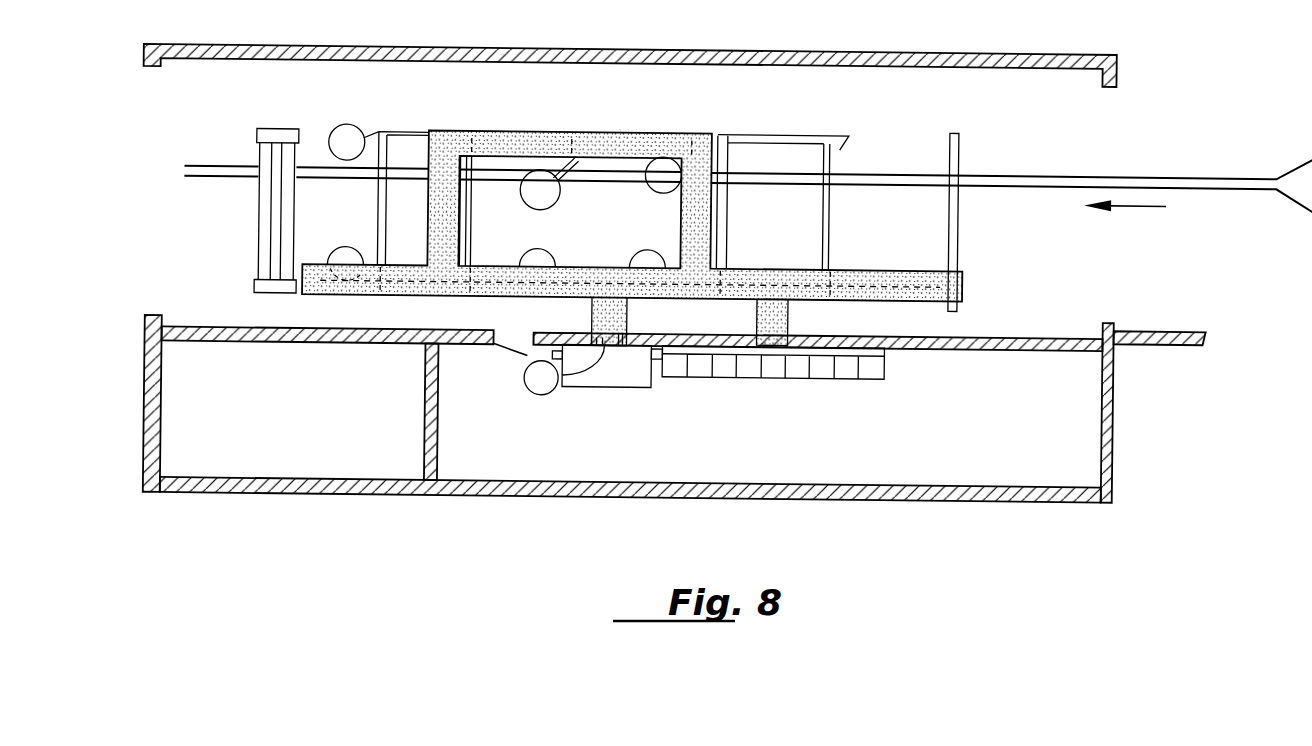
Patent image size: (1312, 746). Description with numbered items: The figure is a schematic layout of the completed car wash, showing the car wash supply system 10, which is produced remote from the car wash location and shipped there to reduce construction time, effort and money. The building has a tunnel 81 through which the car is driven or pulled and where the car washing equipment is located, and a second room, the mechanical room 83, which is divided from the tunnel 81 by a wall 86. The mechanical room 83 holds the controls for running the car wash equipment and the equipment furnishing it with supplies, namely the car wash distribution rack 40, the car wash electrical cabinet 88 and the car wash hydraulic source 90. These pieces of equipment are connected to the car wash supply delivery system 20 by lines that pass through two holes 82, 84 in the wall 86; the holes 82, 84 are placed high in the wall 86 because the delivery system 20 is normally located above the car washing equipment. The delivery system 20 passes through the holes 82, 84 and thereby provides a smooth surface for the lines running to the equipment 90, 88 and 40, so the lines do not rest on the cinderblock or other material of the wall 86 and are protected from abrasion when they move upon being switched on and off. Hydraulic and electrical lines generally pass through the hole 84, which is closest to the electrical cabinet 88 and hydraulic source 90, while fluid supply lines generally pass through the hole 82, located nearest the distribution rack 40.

The car wash supply system 10 is at (572, 326).
The car wash supply delivery system 20 is at (837, 277).
The car wash distribution rack 40 is at (790, 398).
The tunnel 81 is at (825, 95).
The hole 82 is at (790, 334).
The mechanical room 83 is at (925, 460).
The hole 84 is at (628, 334).
The wall 86 is at (967, 345).
The car wash electrical cabinet 88 is at (626, 378).
The car wash hydraulic source 90 is at (545, 390).